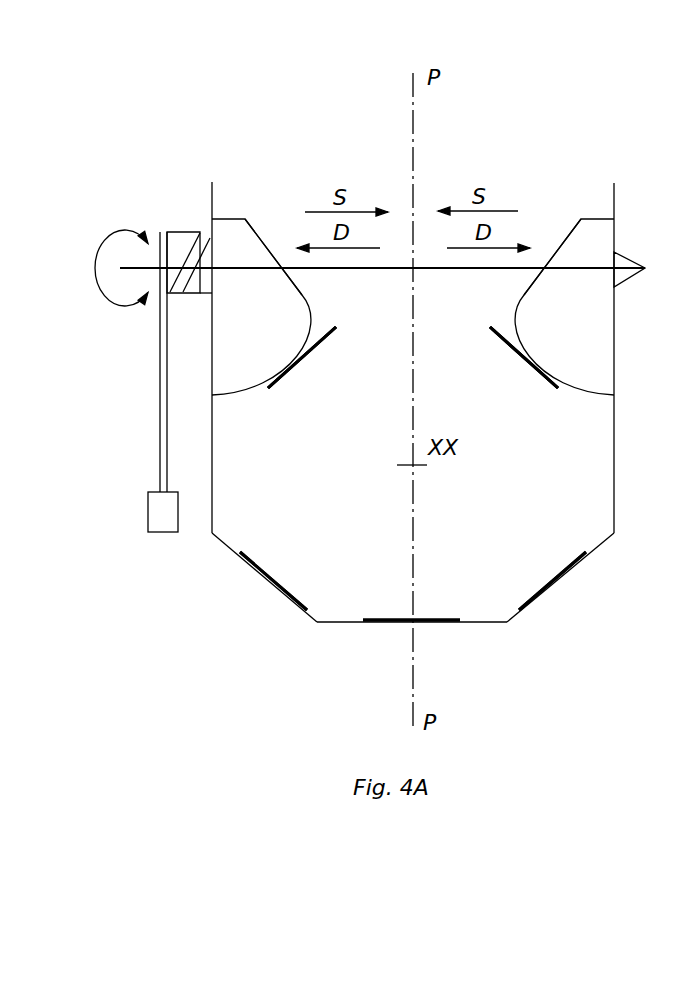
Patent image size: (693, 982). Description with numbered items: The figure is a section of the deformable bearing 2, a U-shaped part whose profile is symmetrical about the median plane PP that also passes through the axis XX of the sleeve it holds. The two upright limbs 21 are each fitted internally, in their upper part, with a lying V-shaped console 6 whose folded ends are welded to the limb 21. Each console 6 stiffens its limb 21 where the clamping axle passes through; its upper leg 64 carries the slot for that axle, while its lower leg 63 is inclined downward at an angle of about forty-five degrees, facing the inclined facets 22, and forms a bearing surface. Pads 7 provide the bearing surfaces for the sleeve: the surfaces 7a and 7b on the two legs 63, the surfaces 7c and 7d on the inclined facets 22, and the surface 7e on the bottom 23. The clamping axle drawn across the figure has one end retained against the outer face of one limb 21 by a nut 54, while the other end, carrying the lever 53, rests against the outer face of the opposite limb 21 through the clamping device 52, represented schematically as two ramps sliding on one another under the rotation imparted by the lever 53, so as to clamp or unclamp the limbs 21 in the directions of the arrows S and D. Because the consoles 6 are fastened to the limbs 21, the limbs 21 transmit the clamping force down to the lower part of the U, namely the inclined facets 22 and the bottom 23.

The deformable bearing 2 is at (600, 122).
The console 6 is at (263, 240).
The pad 7 is at (331, 335).
The bearing surface 7a is at (303, 364).
The bearing surface 7b is at (522, 364).
The bearing surface 7c is at (270, 575).
The bearing surface 7d is at (553, 577).
The bearing surface 7e is at (428, 617).
The limb 21 is at (214, 437).
The inclined facet 22 is at (317, 624).
The bottom 23 is at (480, 624).
The clamping device 52 is at (187, 222).
The lever 53 is at (158, 385).
The nut 54 is at (627, 254).
The lower leg 63 is at (290, 362).
The upper leg 64 is at (302, 290).